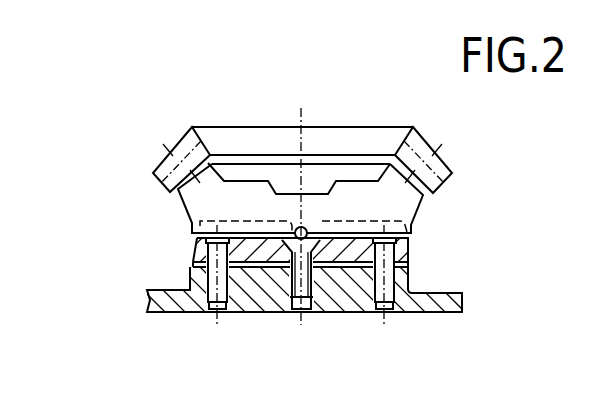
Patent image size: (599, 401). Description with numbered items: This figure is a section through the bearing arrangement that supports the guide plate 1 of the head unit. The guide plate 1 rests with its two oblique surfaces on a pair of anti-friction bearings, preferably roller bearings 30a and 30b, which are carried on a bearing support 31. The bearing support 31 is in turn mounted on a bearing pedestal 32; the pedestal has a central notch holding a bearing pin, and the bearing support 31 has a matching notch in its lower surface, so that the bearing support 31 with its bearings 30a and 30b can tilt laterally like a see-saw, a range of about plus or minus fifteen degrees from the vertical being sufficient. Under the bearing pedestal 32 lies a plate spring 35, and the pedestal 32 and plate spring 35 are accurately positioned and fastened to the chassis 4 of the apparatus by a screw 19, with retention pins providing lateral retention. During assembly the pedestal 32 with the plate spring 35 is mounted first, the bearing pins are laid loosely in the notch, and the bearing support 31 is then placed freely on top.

The guide plate 1 is at (359, 143).
The roller bearing 30a is at (166, 160).
The roller bearing 30b is at (446, 166).
The bearing support 31 is at (197, 212).
The bearing pedestal 32 is at (203, 257).
The plate spring 35 is at (407, 266).
The chassis 4 is at (453, 303).
The screw 19 is at (295, 315).